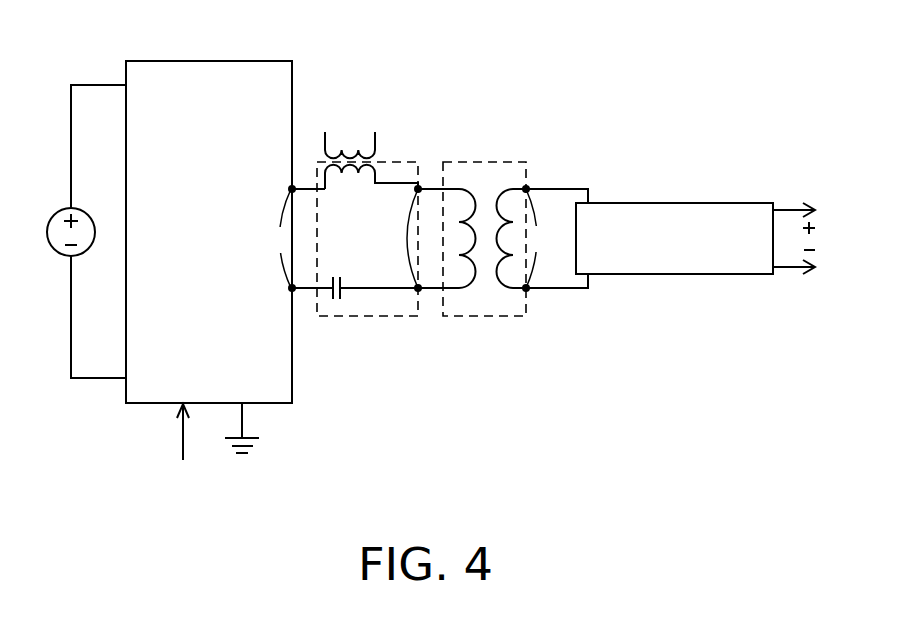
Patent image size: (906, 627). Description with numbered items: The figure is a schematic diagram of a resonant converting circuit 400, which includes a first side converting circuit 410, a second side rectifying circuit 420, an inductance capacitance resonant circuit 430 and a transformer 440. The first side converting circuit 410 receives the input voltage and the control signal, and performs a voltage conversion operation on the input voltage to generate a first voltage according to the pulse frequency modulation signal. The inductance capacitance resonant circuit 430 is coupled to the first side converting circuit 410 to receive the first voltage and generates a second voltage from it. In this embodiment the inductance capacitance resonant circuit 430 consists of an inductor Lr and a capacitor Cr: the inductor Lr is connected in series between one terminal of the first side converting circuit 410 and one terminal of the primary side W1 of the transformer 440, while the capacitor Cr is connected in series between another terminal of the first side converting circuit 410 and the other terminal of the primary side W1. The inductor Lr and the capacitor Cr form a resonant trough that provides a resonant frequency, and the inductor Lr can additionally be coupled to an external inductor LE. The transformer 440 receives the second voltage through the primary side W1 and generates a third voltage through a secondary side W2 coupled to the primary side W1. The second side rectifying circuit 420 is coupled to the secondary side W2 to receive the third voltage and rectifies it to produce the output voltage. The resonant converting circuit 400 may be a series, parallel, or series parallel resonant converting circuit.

The resonant converting circuit 400 is at (848, 469).
The first side converting circuit 410 is at (193, 61).
The second side rectifying circuit 420 is at (667, 203).
The inductance capacitance resonant circuit 430 is at (379, 194).
The transformer 440 is at (478, 234).
The external inductor LE is at (350, 127).
The inductor Lr is at (371, 187).
The capacitor Cr is at (373, 269).
The primary side W1 is at (452, 292).
The secondary side W2 is at (515, 292).